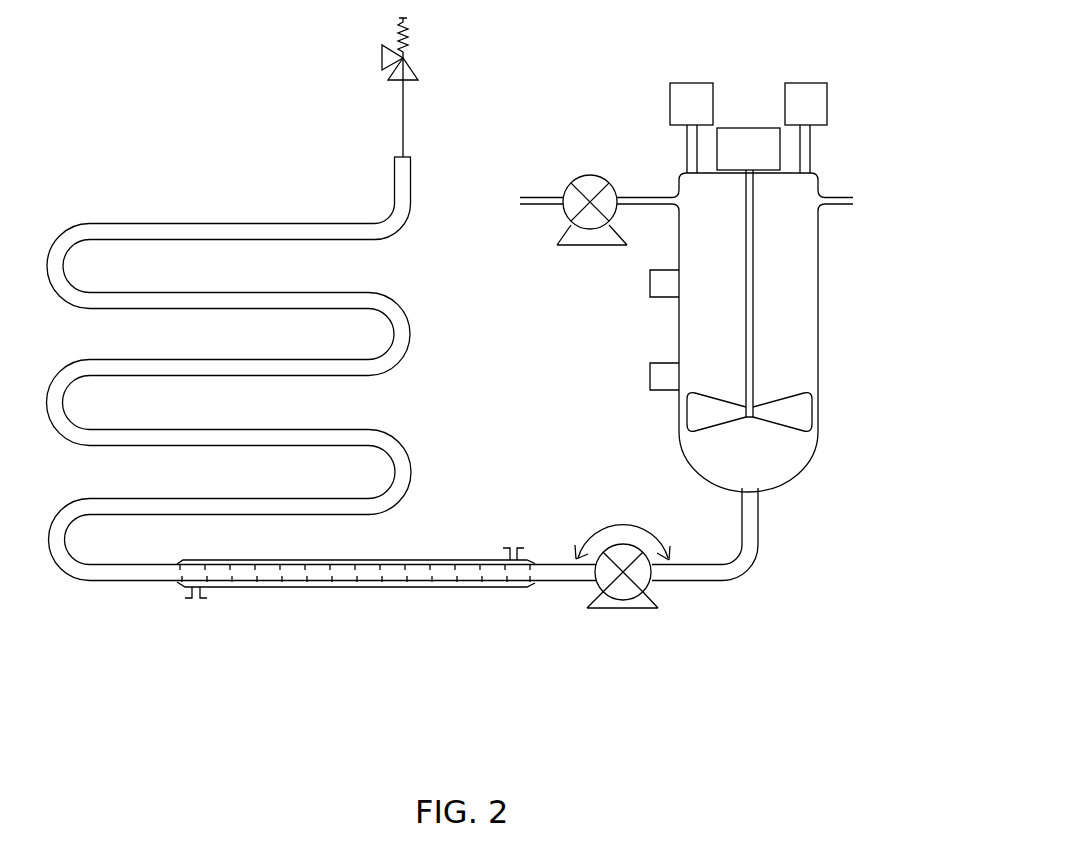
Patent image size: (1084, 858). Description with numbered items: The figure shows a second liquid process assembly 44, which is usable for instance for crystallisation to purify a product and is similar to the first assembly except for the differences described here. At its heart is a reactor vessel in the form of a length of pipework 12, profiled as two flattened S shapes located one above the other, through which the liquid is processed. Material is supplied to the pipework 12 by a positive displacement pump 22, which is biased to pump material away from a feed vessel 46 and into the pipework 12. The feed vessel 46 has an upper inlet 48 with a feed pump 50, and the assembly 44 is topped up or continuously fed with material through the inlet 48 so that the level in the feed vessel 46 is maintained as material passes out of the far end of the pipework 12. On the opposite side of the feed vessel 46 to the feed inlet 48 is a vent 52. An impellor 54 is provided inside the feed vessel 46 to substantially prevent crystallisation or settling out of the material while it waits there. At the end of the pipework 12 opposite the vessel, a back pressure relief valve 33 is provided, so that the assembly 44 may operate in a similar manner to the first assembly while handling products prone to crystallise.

The pipework 12 is at (168, 230).
The positive displacement pump 22 is at (640, 580).
The back pressure relief valve 33 is at (410, 65).
The liquid process assembly 44 is at (245, 653).
The feed vessel 46 is at (822, 303).
The upper inlet 48 is at (650, 198).
The feed pump 50 is at (573, 203).
The vent 52 is at (853, 195).
The impellor 54 is at (750, 390).